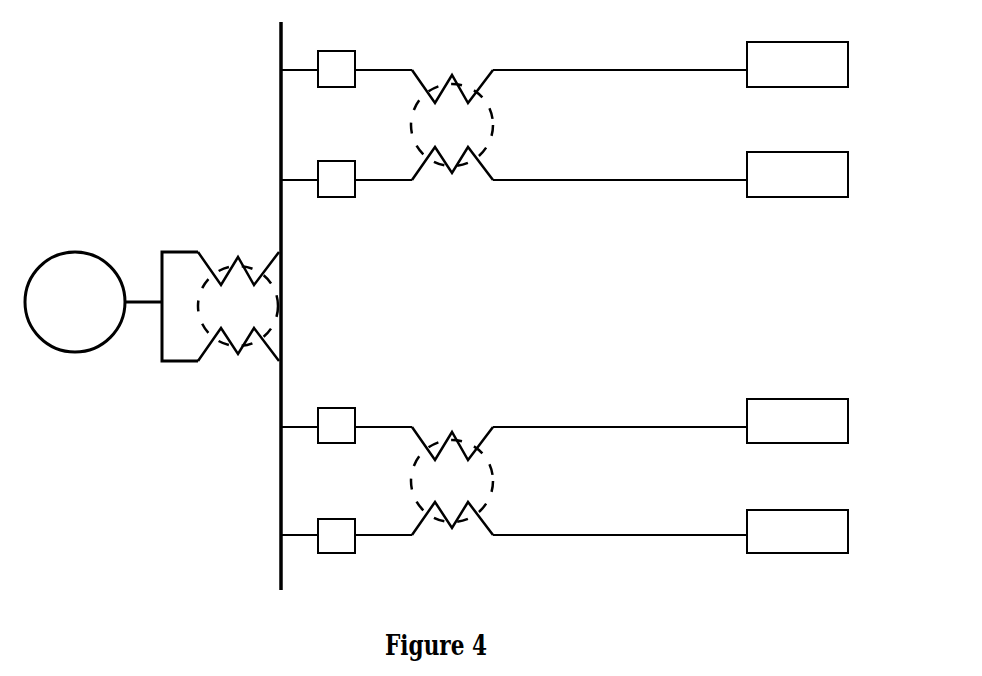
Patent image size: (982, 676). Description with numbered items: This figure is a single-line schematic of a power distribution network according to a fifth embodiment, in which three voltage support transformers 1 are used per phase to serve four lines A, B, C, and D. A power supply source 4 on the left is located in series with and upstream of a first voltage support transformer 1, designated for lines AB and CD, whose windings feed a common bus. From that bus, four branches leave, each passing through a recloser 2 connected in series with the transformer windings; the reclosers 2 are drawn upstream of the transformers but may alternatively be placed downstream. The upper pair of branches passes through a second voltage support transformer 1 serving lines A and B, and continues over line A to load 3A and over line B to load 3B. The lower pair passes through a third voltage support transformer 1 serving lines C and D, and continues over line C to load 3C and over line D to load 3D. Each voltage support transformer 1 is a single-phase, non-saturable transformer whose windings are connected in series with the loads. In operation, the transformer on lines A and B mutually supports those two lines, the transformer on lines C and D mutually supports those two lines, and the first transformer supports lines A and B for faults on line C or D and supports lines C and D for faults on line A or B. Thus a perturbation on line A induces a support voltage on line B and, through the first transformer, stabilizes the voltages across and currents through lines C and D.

The voltage support transformer 1 is at (327, 302).
The recloser 2 is at (336, 302).
The load 3A is at (797, 64).
The load 3B is at (797, 174).
The load 3C is at (797, 421).
The load 3D is at (797, 531).
The power supply source 4 is at (93, 302).
The line A is at (585, 56).
The line B is at (585, 166).
The line C is at (585, 412).
The line D is at (585, 523).